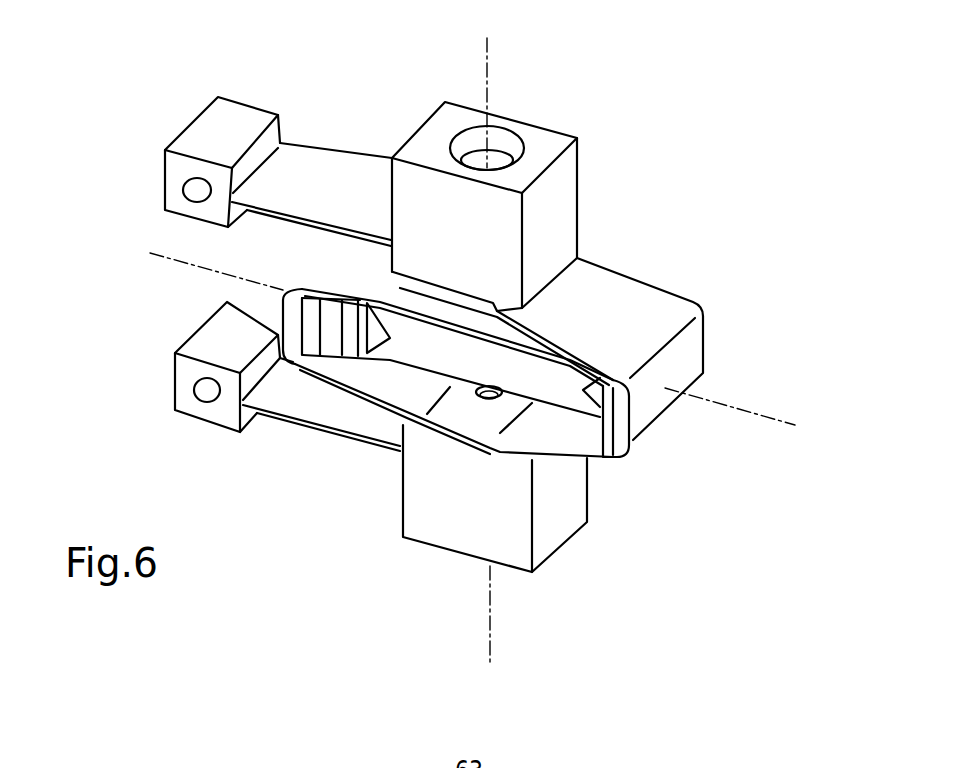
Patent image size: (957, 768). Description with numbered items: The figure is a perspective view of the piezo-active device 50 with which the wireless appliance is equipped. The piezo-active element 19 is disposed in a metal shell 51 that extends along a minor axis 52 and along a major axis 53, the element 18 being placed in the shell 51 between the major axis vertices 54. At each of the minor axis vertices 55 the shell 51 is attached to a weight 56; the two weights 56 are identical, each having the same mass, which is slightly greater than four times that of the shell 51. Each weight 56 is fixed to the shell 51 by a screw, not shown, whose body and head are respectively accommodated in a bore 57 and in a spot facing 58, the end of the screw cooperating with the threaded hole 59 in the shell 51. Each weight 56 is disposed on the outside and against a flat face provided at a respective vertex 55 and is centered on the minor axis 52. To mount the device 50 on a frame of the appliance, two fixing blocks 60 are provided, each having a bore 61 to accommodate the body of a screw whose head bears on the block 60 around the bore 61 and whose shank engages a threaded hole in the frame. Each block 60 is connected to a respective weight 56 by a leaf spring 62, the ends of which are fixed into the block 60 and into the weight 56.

The element 18 is at (408, 327).
The piezo-active element 19 is at (665, 263).
The piezo-active device 50 is at (685, 138).
The metal shell 51 is at (670, 297).
The minor axis 52 is at (500, 58).
The major axis 53 is at (774, 425).
The major axis vertices 54 is at (290, 326).
The minor axis vertices 55 is at (436, 306).
The weight 56 is at (562, 213).
The bore 57 is at (462, 145).
The spot facing 58 is at (477, 138).
The threaded hole 59 is at (485, 390).
The fixing block 60 is at (238, 112).
The bore 61 is at (188, 191).
The leaf spring 62 is at (318, 177).